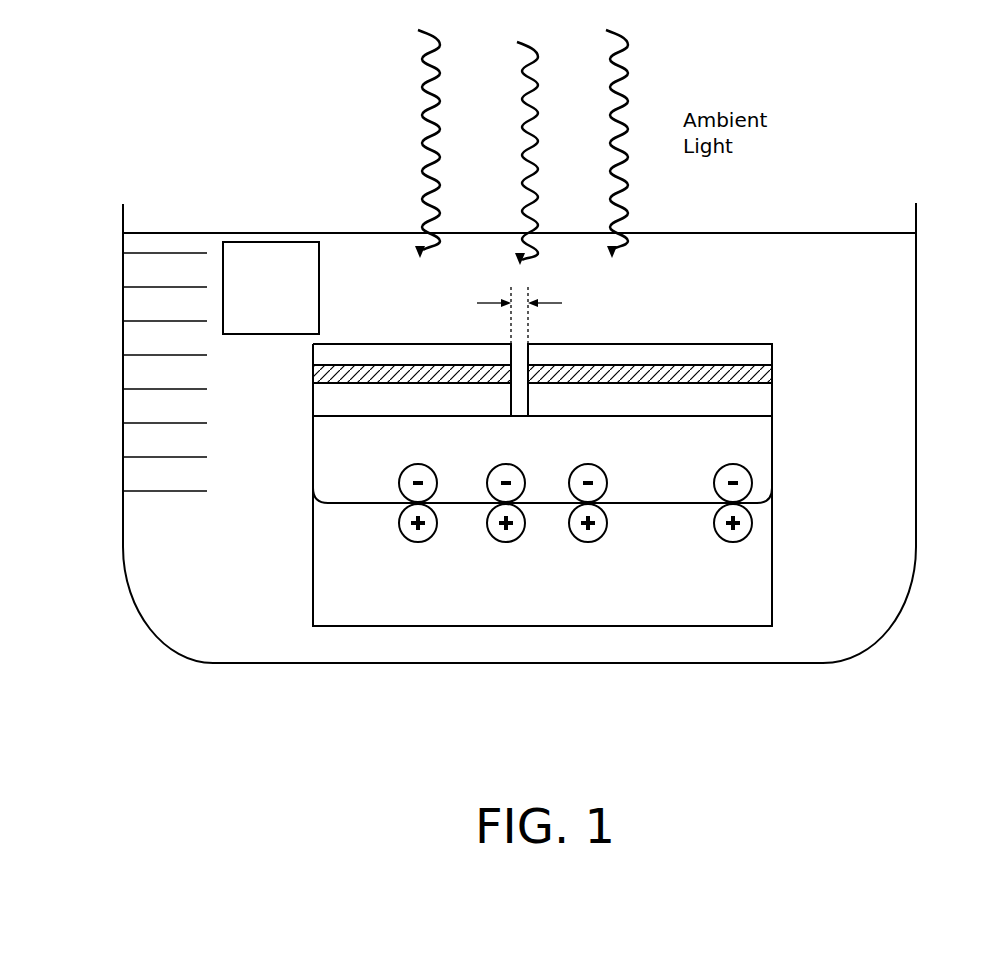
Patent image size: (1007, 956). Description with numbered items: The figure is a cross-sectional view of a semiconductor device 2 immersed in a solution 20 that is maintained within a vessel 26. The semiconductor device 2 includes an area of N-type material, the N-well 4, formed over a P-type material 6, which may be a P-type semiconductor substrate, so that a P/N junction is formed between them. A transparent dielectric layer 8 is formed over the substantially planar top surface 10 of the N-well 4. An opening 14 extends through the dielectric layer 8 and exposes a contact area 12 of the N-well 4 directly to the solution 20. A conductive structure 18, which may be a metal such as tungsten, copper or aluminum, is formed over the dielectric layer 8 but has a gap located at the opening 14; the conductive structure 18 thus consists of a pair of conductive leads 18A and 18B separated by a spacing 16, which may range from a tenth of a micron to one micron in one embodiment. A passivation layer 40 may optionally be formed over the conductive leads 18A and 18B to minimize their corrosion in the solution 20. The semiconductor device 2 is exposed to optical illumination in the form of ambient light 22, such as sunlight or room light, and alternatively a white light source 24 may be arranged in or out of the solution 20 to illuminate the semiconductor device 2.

The semiconductor device 2 is at (786, 447).
The N-well 4 is at (542, 463).
The P-type material 6 is at (598, 585).
The dielectric layer 8 is at (537, 398).
The top surface 10 is at (387, 417).
The contact area 12 is at (528, 418).
The opening 14 is at (520, 360).
The spacing 16 is at (557, 303).
The conductive structure 18 is at (683, 373).
The conductive lead 18A is at (348, 366).
The conductive lead 18B is at (762, 373).
The solution 20 is at (499, 372).
The ambient light 22 is at (420, 121).
The white light source 24 is at (250, 242).
The vessel 26 is at (916, 390).
The passivation layer 40 is at (613, 344).